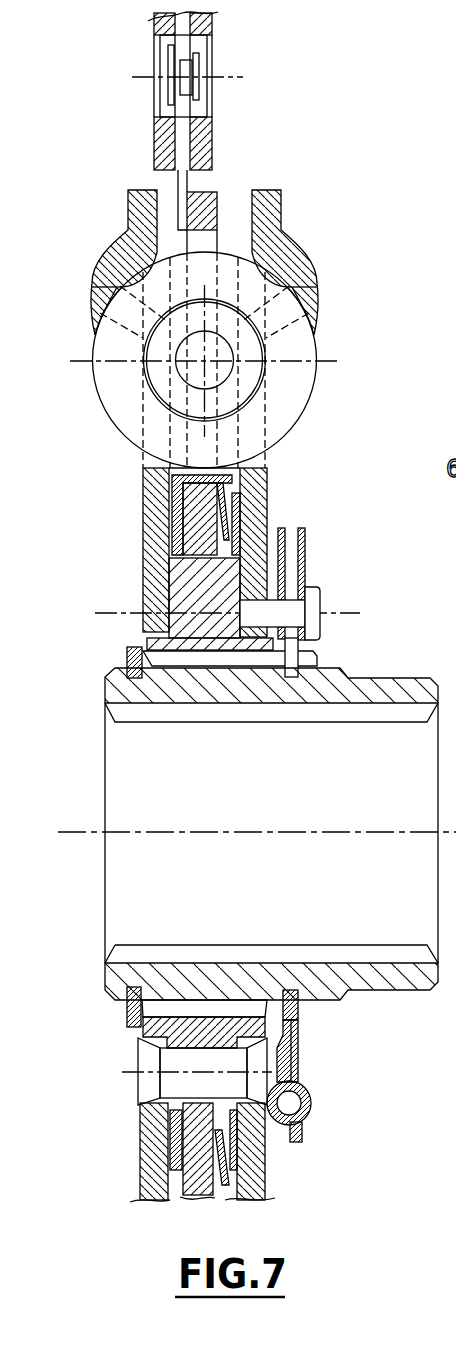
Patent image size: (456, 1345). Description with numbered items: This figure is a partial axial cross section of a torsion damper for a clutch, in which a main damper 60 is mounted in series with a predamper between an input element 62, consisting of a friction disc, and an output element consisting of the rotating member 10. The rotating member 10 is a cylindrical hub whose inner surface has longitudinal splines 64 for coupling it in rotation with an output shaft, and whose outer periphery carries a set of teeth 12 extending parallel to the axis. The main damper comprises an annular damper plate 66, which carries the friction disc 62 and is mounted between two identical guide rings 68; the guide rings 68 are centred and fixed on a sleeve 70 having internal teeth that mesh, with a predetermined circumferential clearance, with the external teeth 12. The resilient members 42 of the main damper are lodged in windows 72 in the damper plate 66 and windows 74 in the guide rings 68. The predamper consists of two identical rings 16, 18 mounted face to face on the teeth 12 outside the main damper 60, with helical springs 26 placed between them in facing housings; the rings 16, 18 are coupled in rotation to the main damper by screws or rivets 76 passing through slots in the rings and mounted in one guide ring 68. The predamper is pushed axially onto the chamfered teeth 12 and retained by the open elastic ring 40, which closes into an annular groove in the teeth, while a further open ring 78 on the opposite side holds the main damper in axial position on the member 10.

The rotating member 10 is at (100, 710).
The teeth 12 is at (305, 657).
The ring 16 is at (282, 527).
The ring 18 is at (303, 527).
The helical spring 26 is at (312, 1088).
The open elastic ring 40 is at (296, 990).
The resilient member 42 is at (93, 377).
The main damper 60 is at (108, 430).
The input element 62 is at (150, 140).
The longitudinal splines 64 is at (208, 715).
The annular damper plate 66 is at (192, 190).
The guide ring 68 is at (127, 219).
The sleeve 70 is at (172, 612).
The window 72 is at (208, 243).
The window 74 is at (100, 297).
The screw or rivet 76 is at (313, 605).
The open ring 78 is at (134, 1013).